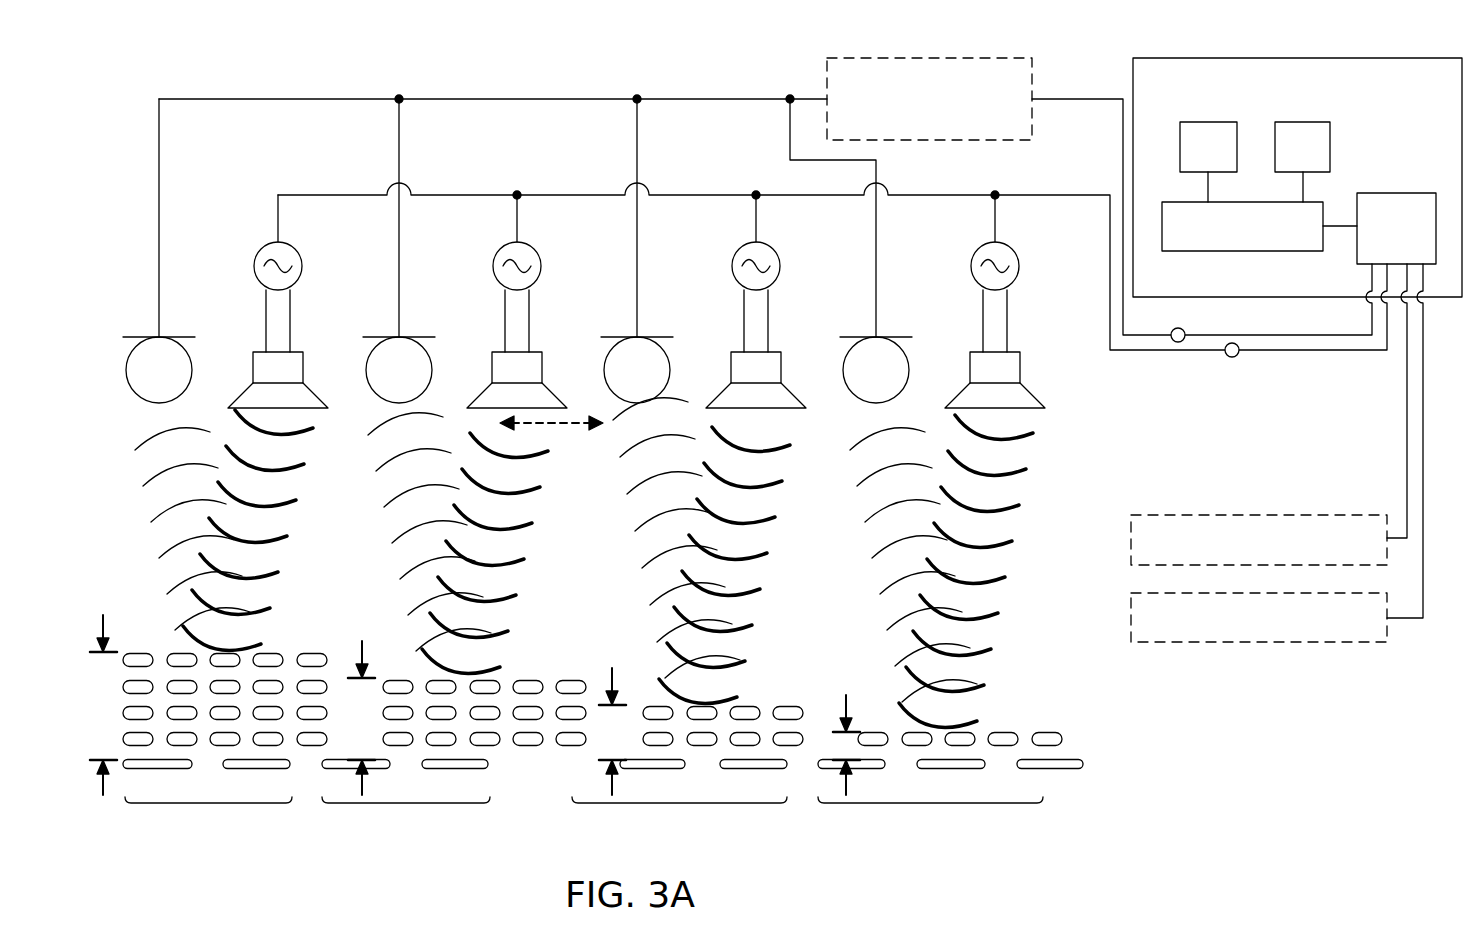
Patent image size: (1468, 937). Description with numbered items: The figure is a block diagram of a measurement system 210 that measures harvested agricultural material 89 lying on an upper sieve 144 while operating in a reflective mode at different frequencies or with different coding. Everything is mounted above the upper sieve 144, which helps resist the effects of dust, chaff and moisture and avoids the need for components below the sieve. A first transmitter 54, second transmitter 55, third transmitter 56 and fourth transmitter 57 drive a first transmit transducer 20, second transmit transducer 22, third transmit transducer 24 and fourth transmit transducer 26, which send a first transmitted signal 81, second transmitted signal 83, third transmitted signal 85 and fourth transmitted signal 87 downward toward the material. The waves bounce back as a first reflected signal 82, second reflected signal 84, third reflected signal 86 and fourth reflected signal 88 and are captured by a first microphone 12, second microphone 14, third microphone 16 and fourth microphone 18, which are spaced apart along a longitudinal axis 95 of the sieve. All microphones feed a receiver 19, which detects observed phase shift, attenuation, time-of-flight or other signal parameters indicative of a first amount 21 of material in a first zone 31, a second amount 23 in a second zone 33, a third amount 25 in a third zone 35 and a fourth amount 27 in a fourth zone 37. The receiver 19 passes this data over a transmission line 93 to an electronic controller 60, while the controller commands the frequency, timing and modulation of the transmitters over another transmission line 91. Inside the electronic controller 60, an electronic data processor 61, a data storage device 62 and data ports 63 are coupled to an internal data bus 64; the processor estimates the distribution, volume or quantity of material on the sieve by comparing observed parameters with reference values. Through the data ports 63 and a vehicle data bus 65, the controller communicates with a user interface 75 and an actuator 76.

The first microphone 12 is at (192, 357).
The second microphone 14 is at (432, 357).
The third microphone 16 is at (670, 355).
The fourth microphone 18 is at (910, 355).
The first transmit transducer 20 is at (304, 367).
The second transmit transducer 22 is at (544, 367).
The third transmit transducer 24 is at (783, 367).
The fourth transmit transducer 26 is at (1021, 367).
The first transmitter 54 is at (302, 275).
The second transmitter 55 is at (541, 275).
The third transmitter 56 is at (780, 275).
The fourth transmitter 57 is at (1019, 275).
The receiver 19 is at (929, 99).
The electronic controller 60 is at (1297, 177).
The electronic data processor 61 is at (1222, 159).
The data storage device 62 is at (1317, 159).
The data ports 63 is at (1410, 237).
The data bus 64 is at (1257, 237).
The vehicle data bus 65 is at (1407, 436).
The actuator 76 is at (1259, 540).
The user interface 75 is at (1259, 617).
The transmission line 93 is at (1184, 329).
The transmission line 91 is at (1230, 358).
The longitudinal axis 95 is at (575, 417).
The first transmitted signal 81 is at (270, 538).
The first reflected signal 82 is at (178, 551).
The second transmitted signal 83 is at (518, 526).
The second reflected signal 84 is at (405, 579).
The third transmitted signal 85 is at (760, 515).
The third reflected signal 86 is at (650, 602).
The fourth transmitted signal 87 is at (998, 538).
The fourth reflected signal 88 is at (880, 630).
The harvested agricultural material 89 is at (288, 648).
The first amount 21 is at (105, 688).
The second amount 23 is at (362, 702).
The third amount 25 is at (611, 715).
The fourth amount 27 is at (847, 729).
The first zone 31 is at (152, 803).
The second zone 33 is at (387, 803).
The third zone 35 is at (597, 803).
The fourth zone 37 is at (862, 803).
The upper sieve 144 is at (1050, 769).
The measurement system 210 is at (1282, 794).